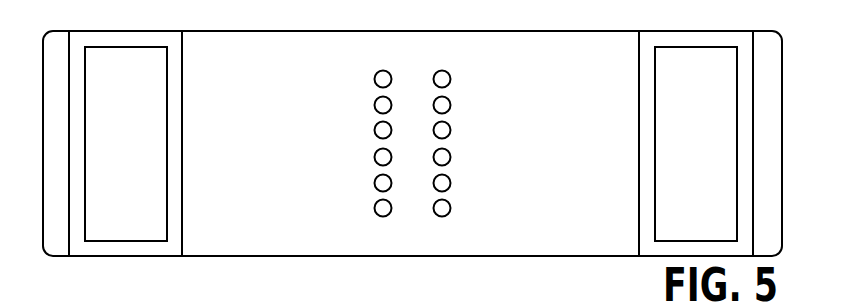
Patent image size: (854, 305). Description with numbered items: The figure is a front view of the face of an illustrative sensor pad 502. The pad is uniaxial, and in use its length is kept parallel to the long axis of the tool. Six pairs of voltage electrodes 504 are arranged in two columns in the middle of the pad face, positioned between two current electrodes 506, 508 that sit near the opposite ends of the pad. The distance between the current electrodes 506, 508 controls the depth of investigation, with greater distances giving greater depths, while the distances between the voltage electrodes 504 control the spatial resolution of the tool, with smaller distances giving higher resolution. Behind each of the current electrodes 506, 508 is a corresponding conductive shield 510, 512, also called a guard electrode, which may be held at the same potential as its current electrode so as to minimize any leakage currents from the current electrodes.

The sensor pad 502 is at (278, 30).
The voltage electrodes 504 is at (437, 70).
The current electrode 506 is at (108, 47).
The current electrode 508 is at (654, 60).
The conductive shield 510 is at (182, 105).
The conductive shield 512 is at (639, 143).